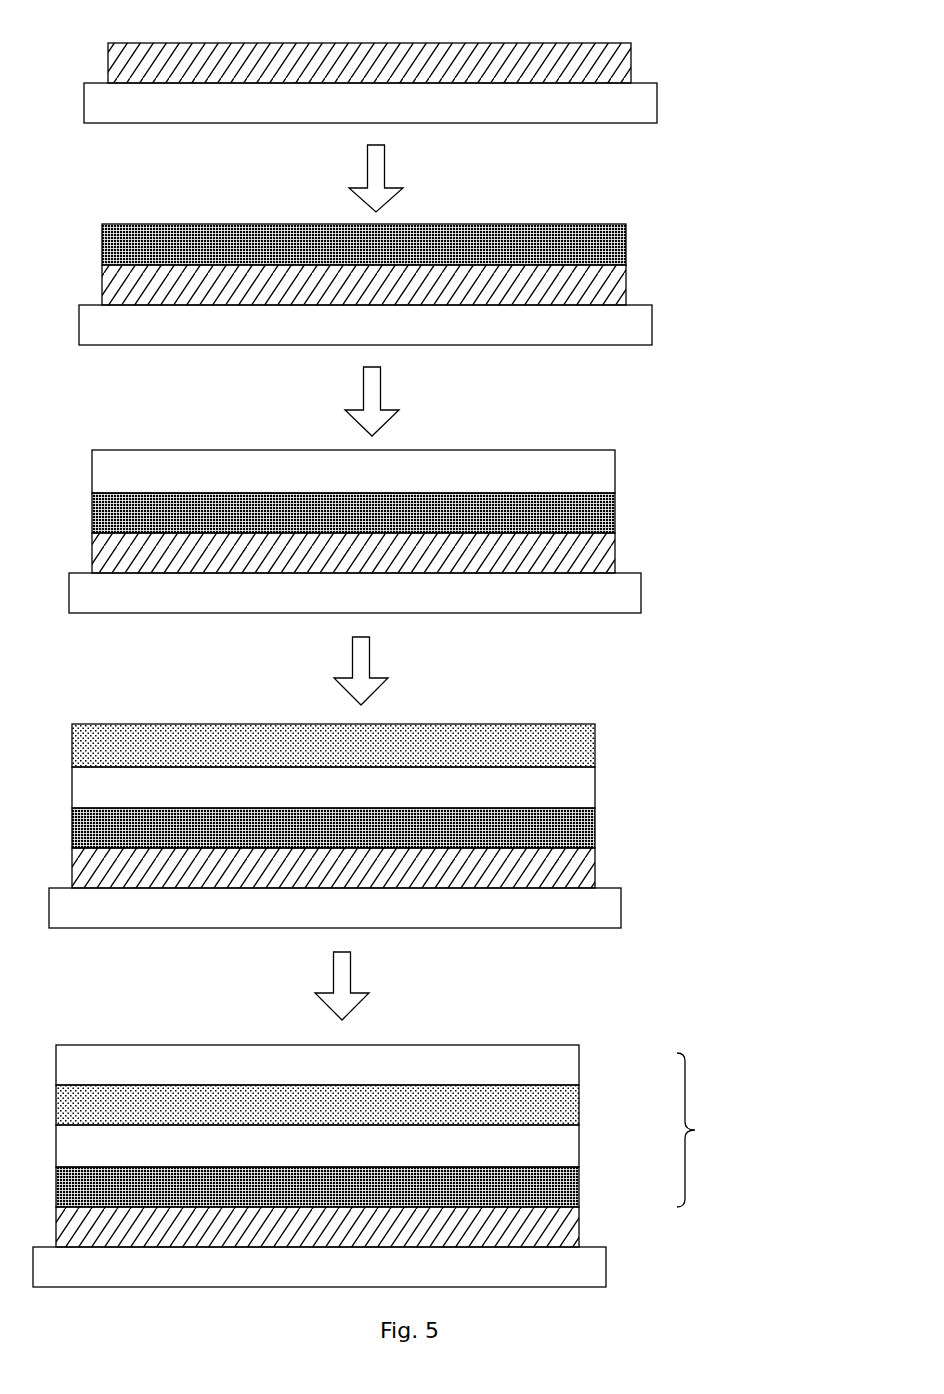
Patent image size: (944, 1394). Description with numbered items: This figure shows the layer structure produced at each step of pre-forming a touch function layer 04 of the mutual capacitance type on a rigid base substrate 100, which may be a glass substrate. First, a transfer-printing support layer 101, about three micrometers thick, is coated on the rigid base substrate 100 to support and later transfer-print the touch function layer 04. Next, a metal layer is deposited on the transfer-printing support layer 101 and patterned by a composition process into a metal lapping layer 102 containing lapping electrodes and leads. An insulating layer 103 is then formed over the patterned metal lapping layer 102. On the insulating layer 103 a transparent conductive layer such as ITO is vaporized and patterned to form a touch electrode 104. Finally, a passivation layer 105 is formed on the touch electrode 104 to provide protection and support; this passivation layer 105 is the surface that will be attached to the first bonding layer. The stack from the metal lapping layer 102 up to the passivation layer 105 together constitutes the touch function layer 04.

The rigid base substrate 100 is at (629, 99).
The transfer-printing support layer 101 is at (600, 63).
The metal lapping layer 102 is at (626, 248).
The insulating layer 103 is at (575, 478).
The touch electrode 104 is at (595, 757).
The passivation layer 105 is at (538, 1063).
The touch function layer 04 is at (701, 1130).